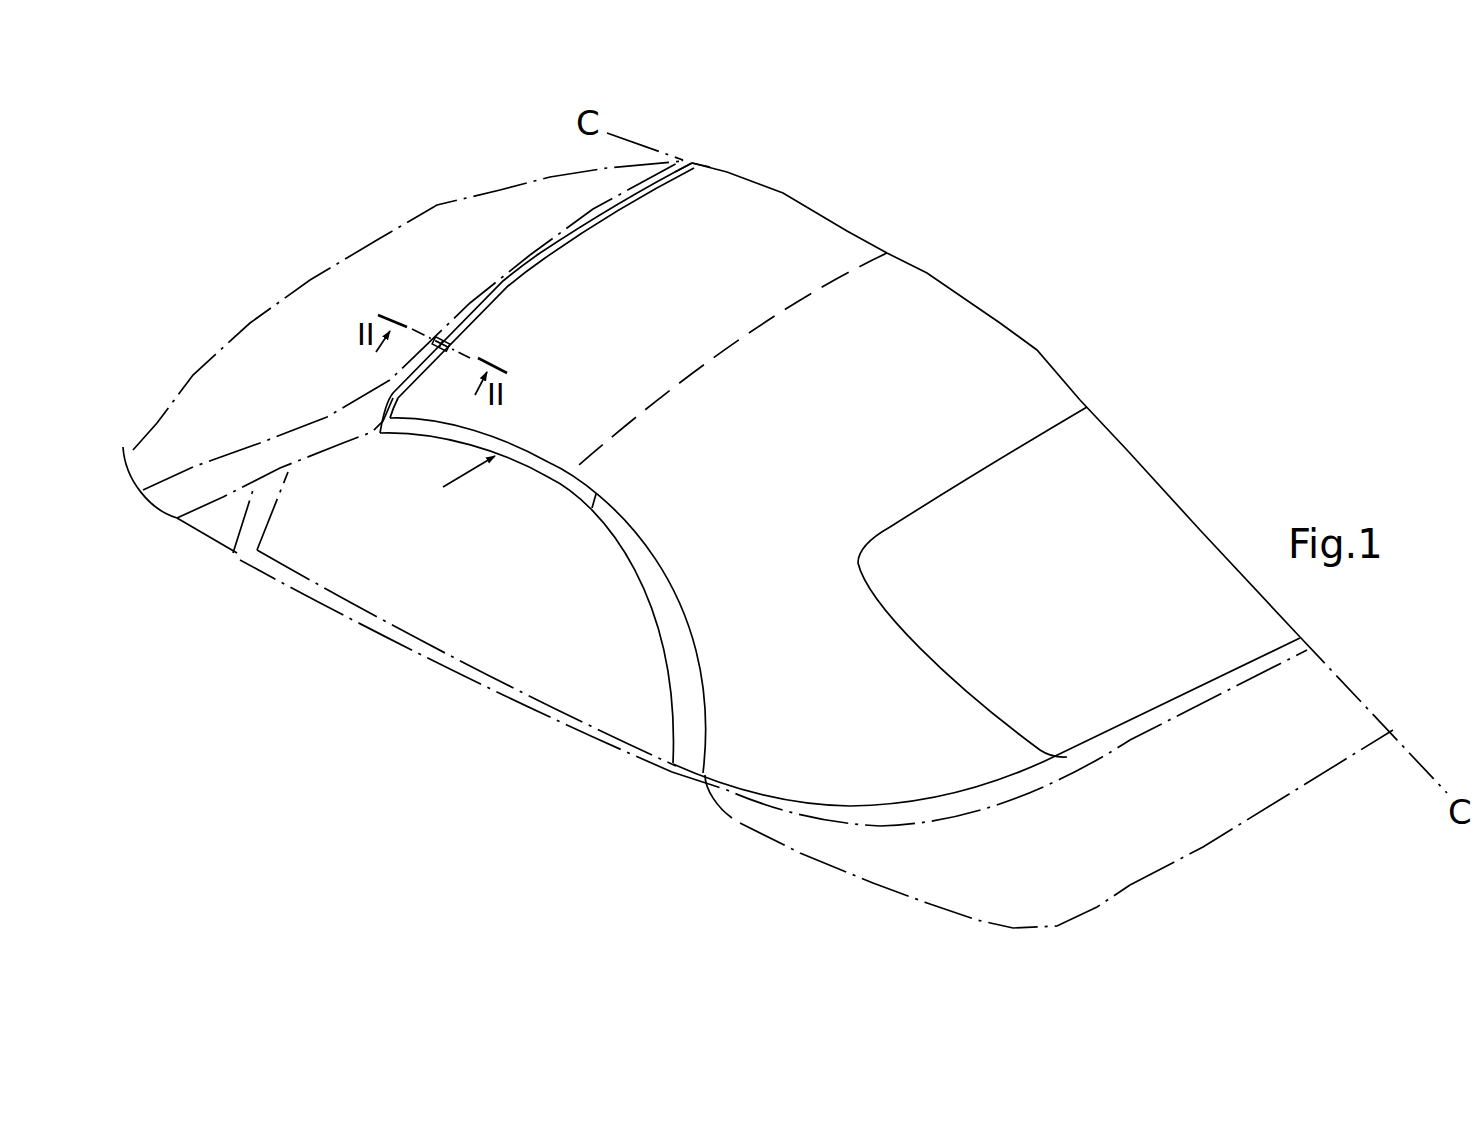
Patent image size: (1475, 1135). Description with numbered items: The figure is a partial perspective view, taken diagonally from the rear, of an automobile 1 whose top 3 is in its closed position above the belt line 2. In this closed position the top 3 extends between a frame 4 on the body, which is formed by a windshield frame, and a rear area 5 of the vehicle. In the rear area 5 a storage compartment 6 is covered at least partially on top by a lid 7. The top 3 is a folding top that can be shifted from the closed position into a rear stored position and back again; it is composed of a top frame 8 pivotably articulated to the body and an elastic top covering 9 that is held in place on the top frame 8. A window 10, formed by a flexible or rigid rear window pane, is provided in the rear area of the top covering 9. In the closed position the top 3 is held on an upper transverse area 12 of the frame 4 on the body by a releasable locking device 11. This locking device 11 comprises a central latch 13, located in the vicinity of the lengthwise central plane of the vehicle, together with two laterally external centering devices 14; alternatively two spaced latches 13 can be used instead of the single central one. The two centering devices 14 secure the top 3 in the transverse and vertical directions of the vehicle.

The automobile 1 is at (928, 270).
The belt line 2 is at (474, 668).
The top 3 is at (1074, 382).
The frame on the body 4 is at (502, 281).
The rear area 5 is at (1287, 663).
The storage compartment 6 is at (973, 853).
The lid 7 is at (1204, 847).
The top frame 8 is at (641, 587).
The top covering 9 is at (805, 230).
The window 10 is at (1163, 520).
The locking device 11 is at (692, 157).
The upper transverse area 12 is at (569, 238).
The central latch 13 is at (693, 177).
The centering device 14 is at (437, 338).